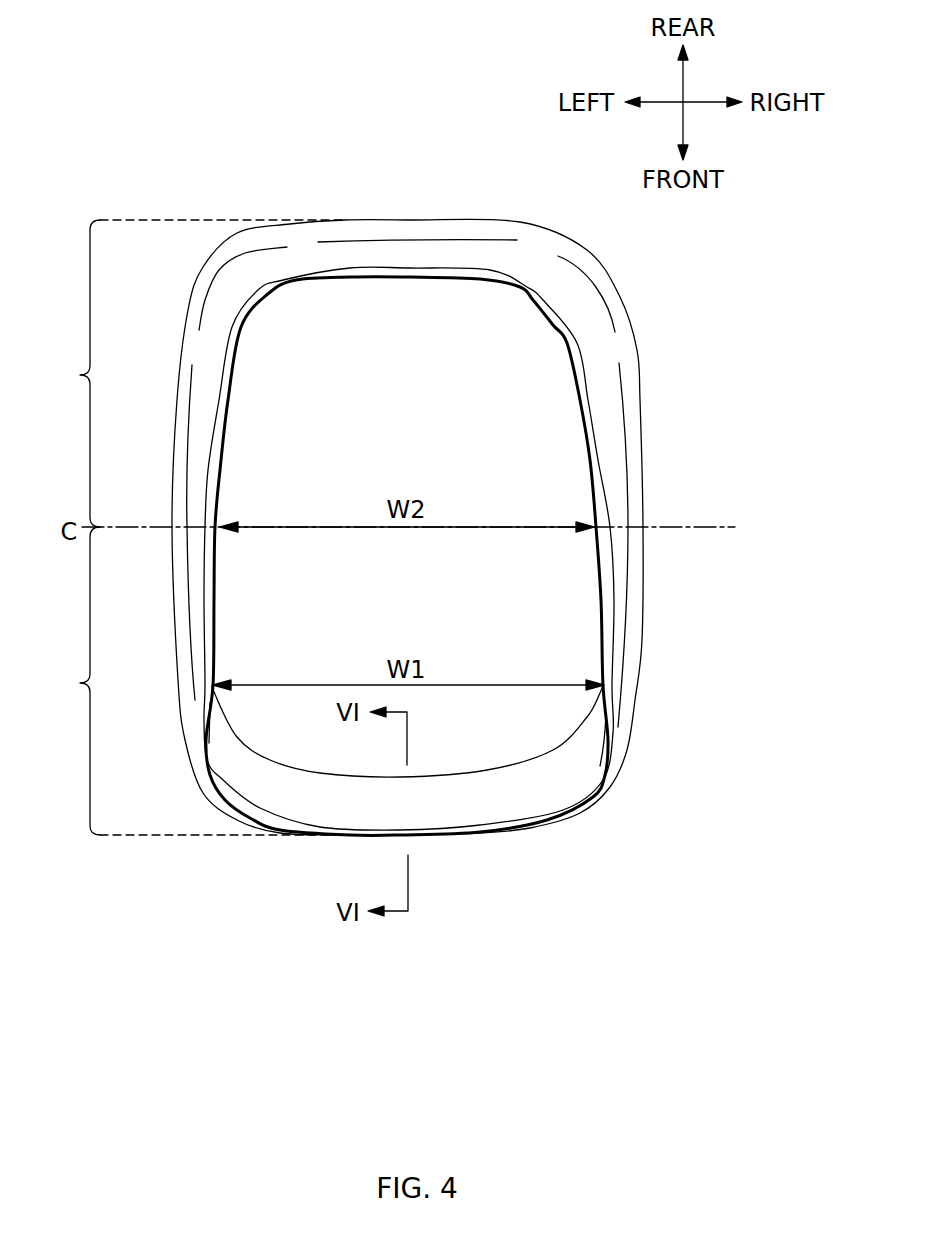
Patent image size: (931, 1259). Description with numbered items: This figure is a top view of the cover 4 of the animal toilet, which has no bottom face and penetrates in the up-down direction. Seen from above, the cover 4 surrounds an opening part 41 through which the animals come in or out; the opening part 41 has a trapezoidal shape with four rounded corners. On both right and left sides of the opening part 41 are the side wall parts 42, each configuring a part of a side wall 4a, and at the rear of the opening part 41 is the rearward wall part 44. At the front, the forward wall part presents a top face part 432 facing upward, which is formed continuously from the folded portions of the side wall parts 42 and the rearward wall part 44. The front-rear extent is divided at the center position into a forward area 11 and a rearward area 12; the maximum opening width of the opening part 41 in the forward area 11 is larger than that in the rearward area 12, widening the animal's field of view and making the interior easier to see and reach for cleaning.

The cover 4 is at (228, 140).
The side wall 4a is at (686, 407).
The opening part 41 is at (538, 336).
The side wall part 42 is at (415, 545).
The rearward wall part 44 is at (483, 232).
The top face part 432 is at (495, 802).
The forward area 11 is at (196, 681).
The rearward area 12 is at (193, 373).